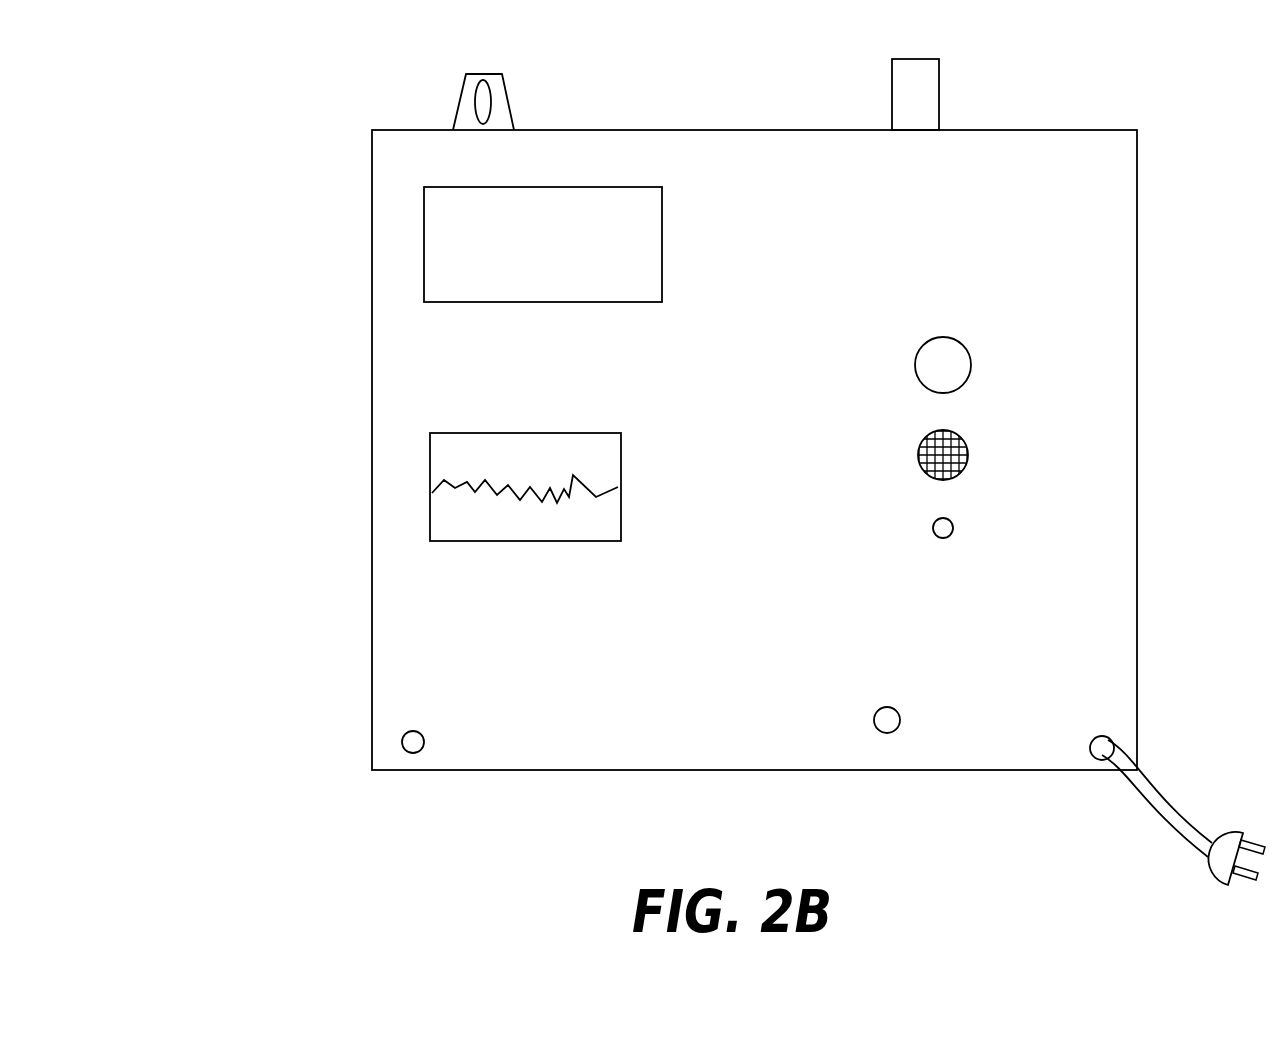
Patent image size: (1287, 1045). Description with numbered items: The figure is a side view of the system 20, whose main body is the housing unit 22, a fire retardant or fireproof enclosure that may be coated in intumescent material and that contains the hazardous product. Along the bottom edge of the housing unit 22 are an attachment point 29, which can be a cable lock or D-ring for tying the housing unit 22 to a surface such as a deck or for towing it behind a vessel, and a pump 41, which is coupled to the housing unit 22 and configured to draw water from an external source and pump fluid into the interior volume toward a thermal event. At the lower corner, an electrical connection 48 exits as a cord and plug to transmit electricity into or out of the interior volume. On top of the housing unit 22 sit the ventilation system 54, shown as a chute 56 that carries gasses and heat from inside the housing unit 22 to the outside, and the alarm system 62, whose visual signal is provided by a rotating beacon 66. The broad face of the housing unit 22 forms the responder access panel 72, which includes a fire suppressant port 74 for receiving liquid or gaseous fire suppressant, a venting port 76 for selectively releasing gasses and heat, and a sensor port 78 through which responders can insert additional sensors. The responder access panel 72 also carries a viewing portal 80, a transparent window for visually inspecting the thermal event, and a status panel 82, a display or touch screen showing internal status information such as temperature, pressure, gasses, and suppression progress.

The system 20 is at (264, 193).
The housing unit 22 is at (294, 695).
The attachment point 29 is at (413, 753).
The pump 41 is at (893, 733).
The electrical connection 48 is at (1155, 815).
The ventilation system 54 is at (872, 101).
The chute 56 is at (940, 85).
The alarm system 62 is at (467, 74).
The rotating beacon 66 is at (498, 74).
The responder access panel 72 is at (556, 625).
The fire suppressant port 74 is at (971, 365).
The venting port 76 is at (968, 455).
The sensor port 78 is at (953, 524).
The viewing portal 80 is at (424, 208).
The status panel 82 is at (430, 453).